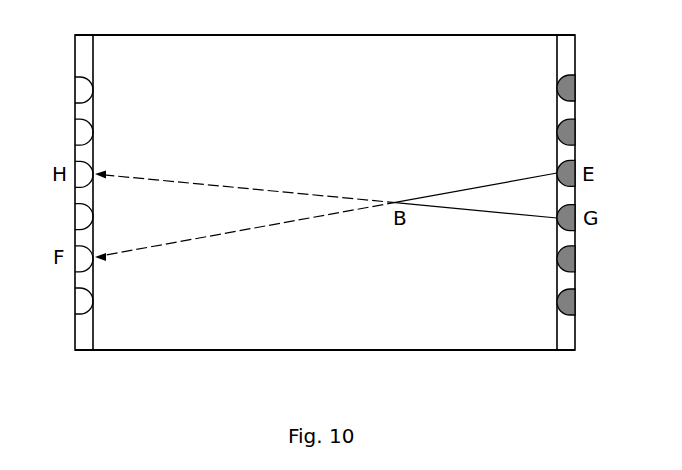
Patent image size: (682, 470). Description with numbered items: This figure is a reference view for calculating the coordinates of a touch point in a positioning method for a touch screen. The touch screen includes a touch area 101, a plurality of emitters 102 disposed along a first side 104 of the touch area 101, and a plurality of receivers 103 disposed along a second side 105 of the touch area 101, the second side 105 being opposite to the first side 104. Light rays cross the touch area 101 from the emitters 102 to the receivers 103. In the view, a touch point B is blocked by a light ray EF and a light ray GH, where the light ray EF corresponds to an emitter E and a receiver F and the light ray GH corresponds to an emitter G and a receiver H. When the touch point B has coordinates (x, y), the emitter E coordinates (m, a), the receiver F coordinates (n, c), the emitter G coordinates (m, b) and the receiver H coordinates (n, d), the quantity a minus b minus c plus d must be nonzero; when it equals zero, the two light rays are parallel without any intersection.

The touch area 101 is at (328, 332).
The emitters 102 is at (575, 303).
The receivers 103 is at (75, 303).
The first side 104 is at (601, 192).
The second side 105 is at (52, 192).